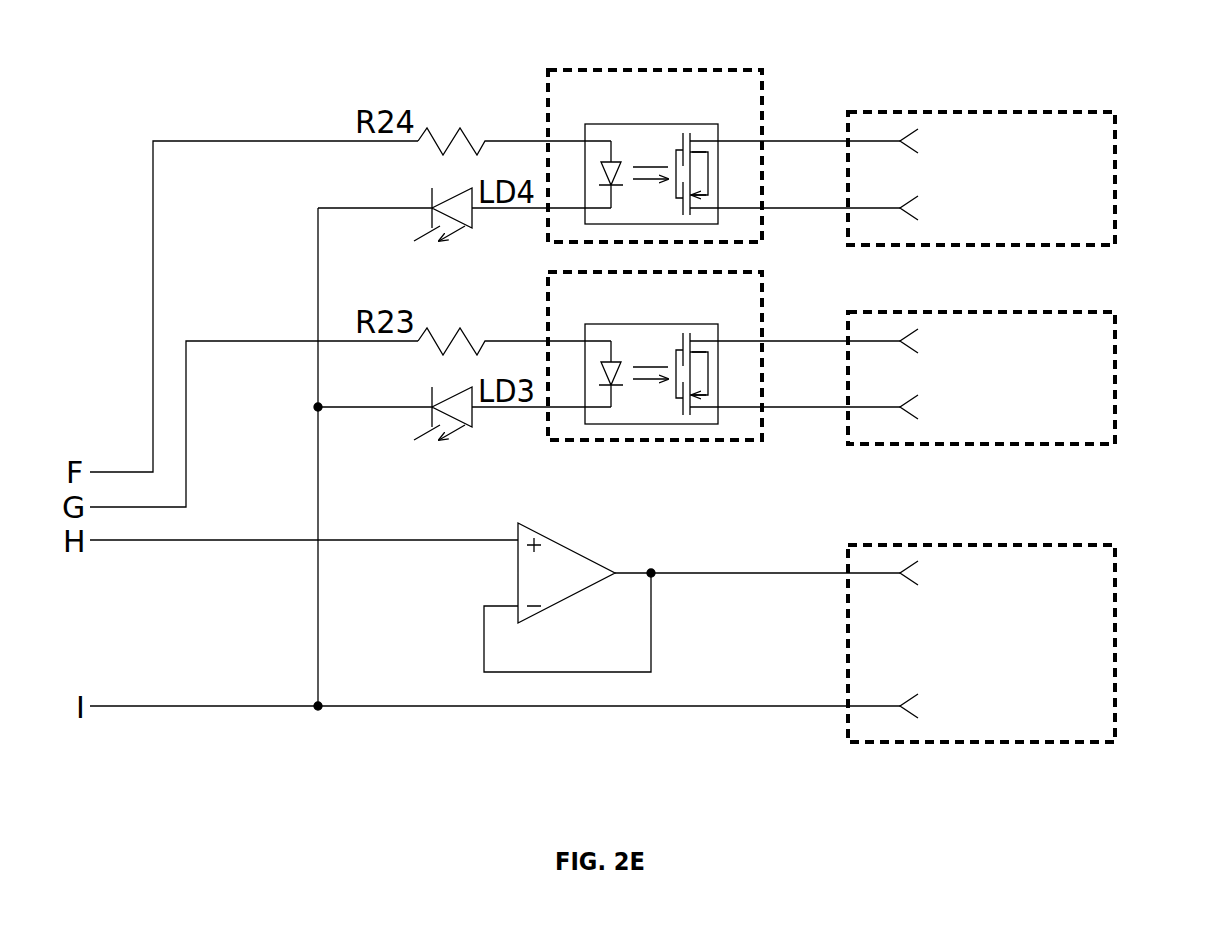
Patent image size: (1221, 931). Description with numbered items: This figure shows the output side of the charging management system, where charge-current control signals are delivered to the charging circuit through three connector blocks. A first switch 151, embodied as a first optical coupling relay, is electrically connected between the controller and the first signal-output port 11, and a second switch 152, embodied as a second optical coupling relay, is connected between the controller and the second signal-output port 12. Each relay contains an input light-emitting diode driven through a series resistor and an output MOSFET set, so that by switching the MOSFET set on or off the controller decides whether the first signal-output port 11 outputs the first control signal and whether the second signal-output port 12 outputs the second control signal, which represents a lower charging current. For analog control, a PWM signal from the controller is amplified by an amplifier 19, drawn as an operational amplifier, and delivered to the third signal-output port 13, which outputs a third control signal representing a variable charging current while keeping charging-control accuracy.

The first switch 151 is at (645, 70).
The second switch 152 is at (655, 440).
The first signal-output port 11 is at (1088, 112).
The second signal-output port 12 is at (1050, 445).
The third signal-output port 13 is at (1050, 742).
The amplifier 19 is at (606, 578).